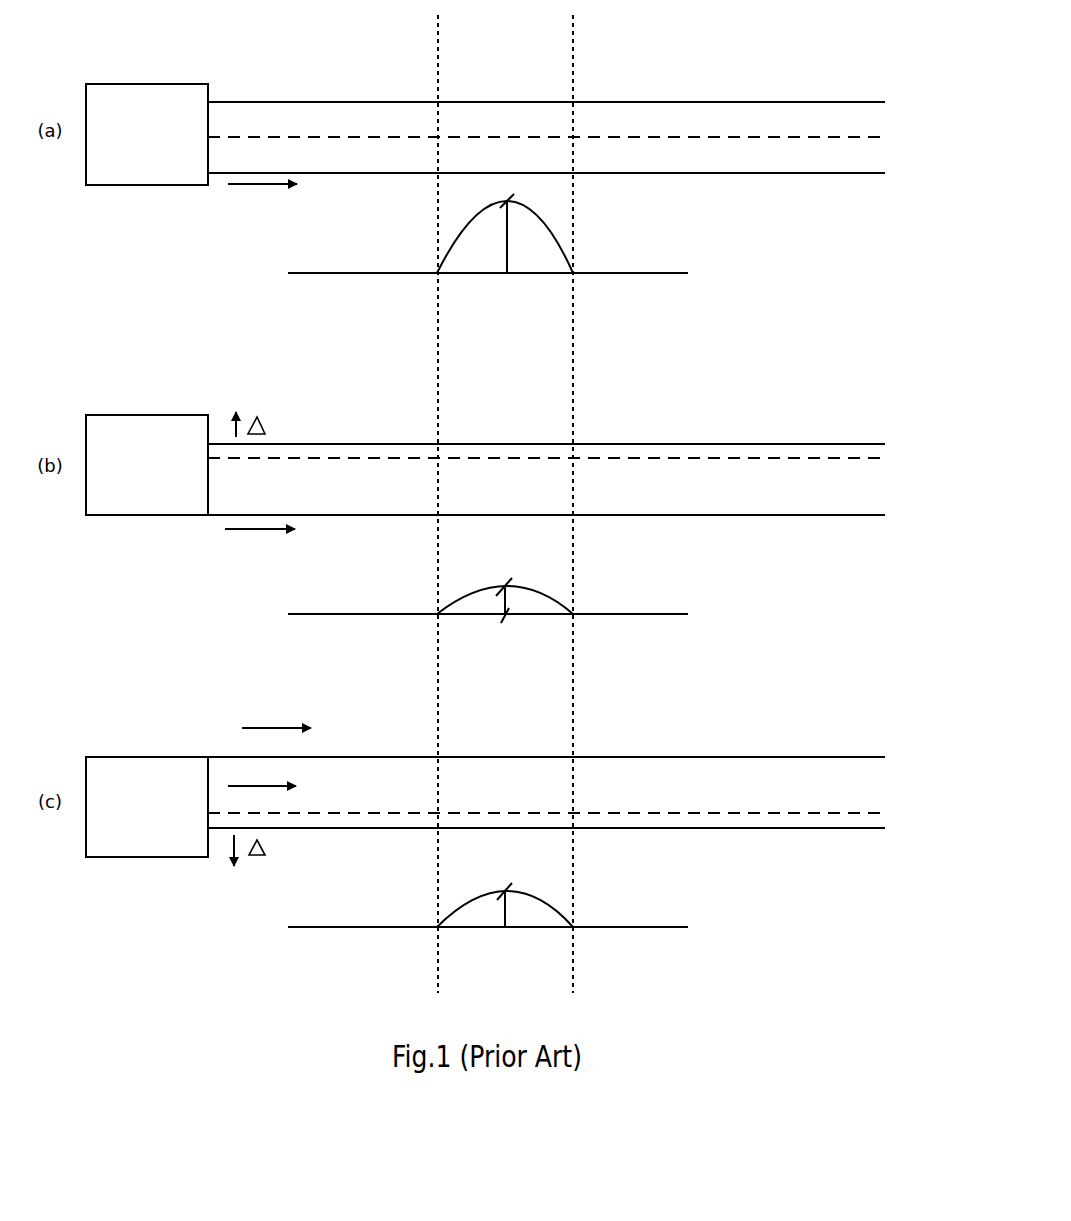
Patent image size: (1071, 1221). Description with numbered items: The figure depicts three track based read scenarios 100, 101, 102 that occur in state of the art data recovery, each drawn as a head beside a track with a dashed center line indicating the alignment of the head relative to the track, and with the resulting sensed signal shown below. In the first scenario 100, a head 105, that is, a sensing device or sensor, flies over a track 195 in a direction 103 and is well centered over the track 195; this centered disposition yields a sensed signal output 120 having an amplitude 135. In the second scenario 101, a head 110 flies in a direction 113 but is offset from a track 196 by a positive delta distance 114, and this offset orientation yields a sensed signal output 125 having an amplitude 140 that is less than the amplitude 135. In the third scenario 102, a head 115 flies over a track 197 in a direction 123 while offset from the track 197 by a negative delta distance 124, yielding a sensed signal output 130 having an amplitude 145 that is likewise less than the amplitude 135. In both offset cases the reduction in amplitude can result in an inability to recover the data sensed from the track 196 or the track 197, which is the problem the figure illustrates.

The track read scenario 100 is at (280, 34).
The track read scenario 101 is at (190, 374).
The track read scenario 102 is at (166, 695).
The direction 103 is at (258, 186).
The head 105 is at (147, 134).
The head 110 is at (147, 465).
The direction 113 is at (255, 531).
The positive delta distance 114 is at (281, 417).
The head 115 is at (147, 807).
The sensed signal output 120 is at (457, 242).
The direction 123 is at (273, 728).
The negative delta distance 124 is at (270, 853).
The sensed signal output 125 is at (448, 607).
The sensed signal output 130 is at (450, 918).
The amplitude 135 is at (507, 247).
The amplitude 140 is at (504, 597).
The amplitude 145 is at (503, 907).
The track 195 is at (758, 102).
The track 196 is at (775, 515).
The track 197 is at (766, 756).